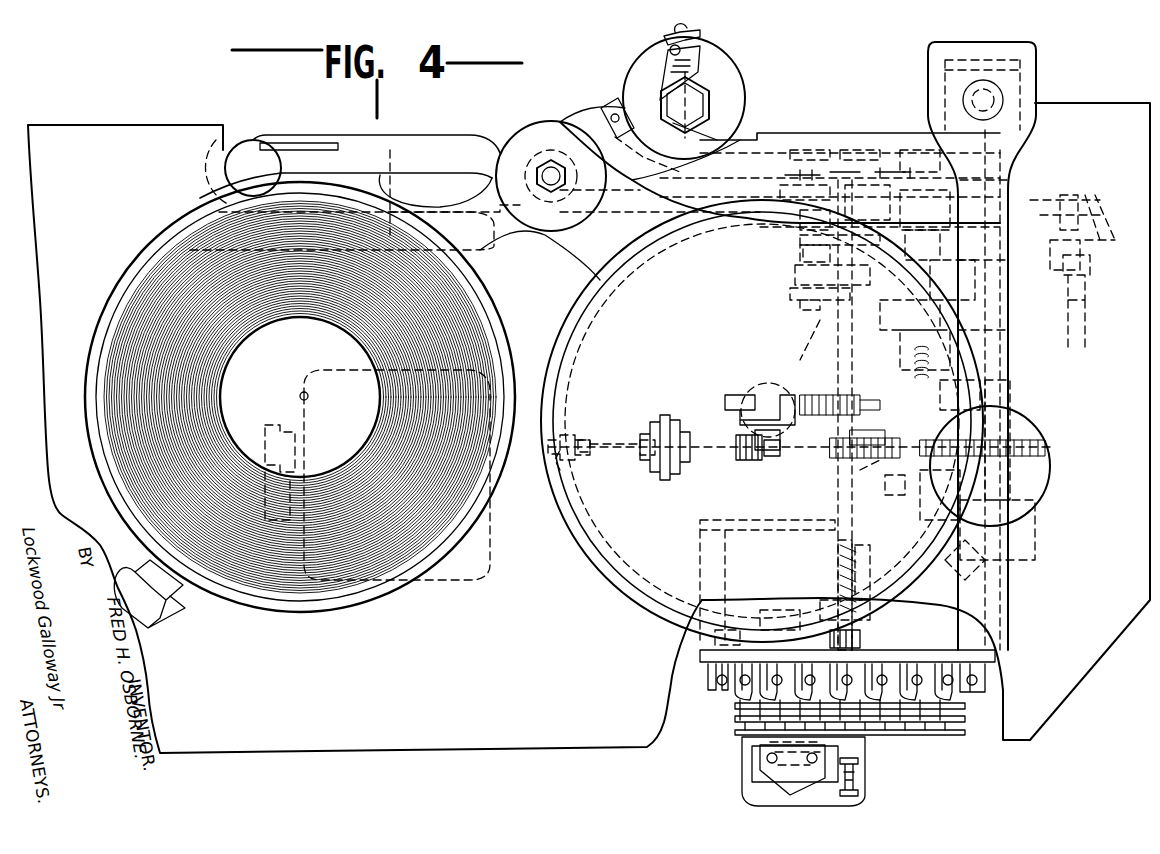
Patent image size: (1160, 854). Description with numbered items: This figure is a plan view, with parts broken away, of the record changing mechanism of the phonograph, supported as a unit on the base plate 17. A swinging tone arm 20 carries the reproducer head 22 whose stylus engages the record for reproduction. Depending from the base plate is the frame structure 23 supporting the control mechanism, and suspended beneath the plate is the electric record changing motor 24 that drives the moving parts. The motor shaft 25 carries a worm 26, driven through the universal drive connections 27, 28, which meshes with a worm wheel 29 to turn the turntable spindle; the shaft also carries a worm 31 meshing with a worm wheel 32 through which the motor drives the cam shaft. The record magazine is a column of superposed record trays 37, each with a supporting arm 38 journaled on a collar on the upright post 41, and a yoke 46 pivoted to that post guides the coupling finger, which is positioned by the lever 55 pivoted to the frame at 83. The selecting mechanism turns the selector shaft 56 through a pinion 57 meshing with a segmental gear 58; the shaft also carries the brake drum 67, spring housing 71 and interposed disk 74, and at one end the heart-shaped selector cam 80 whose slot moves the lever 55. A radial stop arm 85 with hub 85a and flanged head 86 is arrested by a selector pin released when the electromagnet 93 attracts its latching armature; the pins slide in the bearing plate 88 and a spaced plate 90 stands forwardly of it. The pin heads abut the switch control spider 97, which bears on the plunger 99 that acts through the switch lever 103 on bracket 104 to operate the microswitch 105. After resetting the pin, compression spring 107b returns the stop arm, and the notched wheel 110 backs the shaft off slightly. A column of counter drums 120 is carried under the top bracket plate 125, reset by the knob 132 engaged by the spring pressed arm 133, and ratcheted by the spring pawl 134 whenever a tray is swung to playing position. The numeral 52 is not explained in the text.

The base plate 17 is at (333, 740).
The swinging tone arm 20 is at (998, 326).
The reproducer head 22 is at (1050, 485).
The frame structure 23 is at (985, 656).
The electric record changing motor 24 is at (490, 585).
The motor shaft 25 is at (617, 441).
The worm 26 is at (762, 468).
The universal drive connection 27 is at (575, 520).
The universal drive connection 28 is at (668, 425).
The worm wheel 29 is at (728, 396).
The worm 31 is at (884, 470).
The worm wheel 32 is at (1055, 455).
The record tray 37 is at (420, 185).
The supporting arm 38 is at (495, 215).
The upright post 41 is at (549, 166).
The yoke 46 is at (600, 135).
The slide plate 52 is at (782, 140).
The lever 55 is at (1008, 200).
The selector shaft 56 is at (832, 380).
The pinion 57 is at (800, 252).
The segmental gear 58 is at (888, 248).
The brake drum 67 is at (795, 271).
The spring housing 71 is at (800, 308).
The disk 74 is at (793, 292).
The selector cam 80 is at (764, 185).
The lever pivot 83 is at (1070, 198).
The stop arm 85 is at (805, 606).
The hub 85a is at (828, 592).
The flanged head 86 is at (765, 620).
The bearing plate 88 is at (960, 702).
The spaced plate 90 is at (960, 730).
The electromagnet 93 is at (960, 665).
The switch control spider 97 is at (960, 716).
The plunger 99 is at (860, 772).
The switch lever 103 is at (868, 803).
The bracket 104 is at (760, 768).
The microswitch 105 is at (752, 758).
The compression spring 107b is at (865, 636).
The wheel 110 is at (800, 178).
The counter drum 120 is at (705, 48).
The top bracket plate 125 is at (735, 92).
The resetting knob 132 is at (662, 80).
The spring pressed arm 133 is at (705, 75).
The spring pawl 134 is at (606, 100).